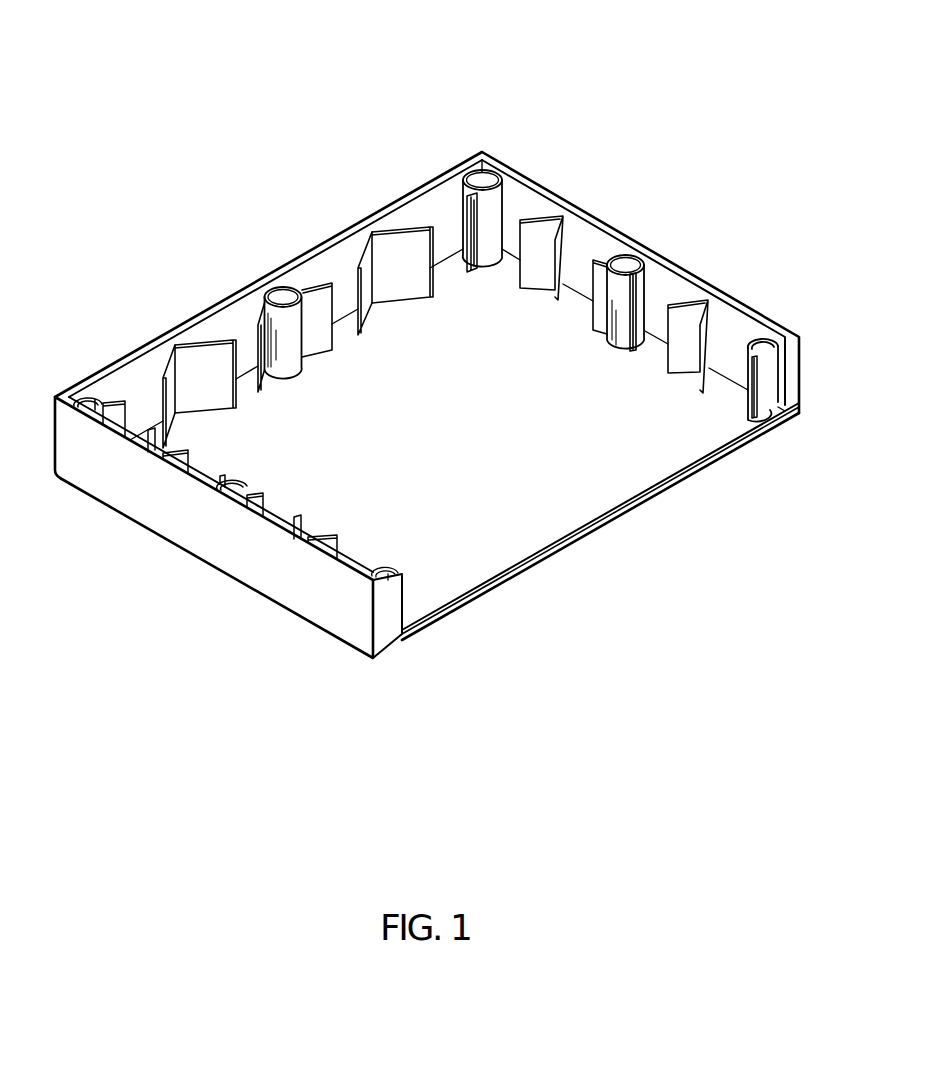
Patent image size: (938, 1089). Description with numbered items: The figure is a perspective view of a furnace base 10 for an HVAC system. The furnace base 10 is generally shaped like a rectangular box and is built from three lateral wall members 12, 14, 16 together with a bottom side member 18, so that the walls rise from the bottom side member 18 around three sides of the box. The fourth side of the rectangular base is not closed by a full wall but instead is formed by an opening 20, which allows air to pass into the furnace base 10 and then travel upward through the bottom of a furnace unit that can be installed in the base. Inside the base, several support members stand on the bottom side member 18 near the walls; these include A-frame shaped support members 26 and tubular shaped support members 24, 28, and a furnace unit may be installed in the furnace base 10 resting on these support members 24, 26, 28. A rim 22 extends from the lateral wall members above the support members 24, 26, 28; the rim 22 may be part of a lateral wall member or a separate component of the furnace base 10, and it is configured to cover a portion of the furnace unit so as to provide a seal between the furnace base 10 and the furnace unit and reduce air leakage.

The furnace base 10 is at (151, 62).
The lateral wall member 12 is at (203, 523).
The lateral wall member 14 is at (346, 222).
The lateral wall member 16 is at (638, 240).
The bottom side member 18 is at (422, 465).
The opening 20 is at (637, 547).
The rim 22 is at (678, 287).
The tubular shaped support member 24 is at (302, 368).
The A-frame shaped support member 26 is at (400, 289).
The tubular shaped support member 28 is at (488, 250).